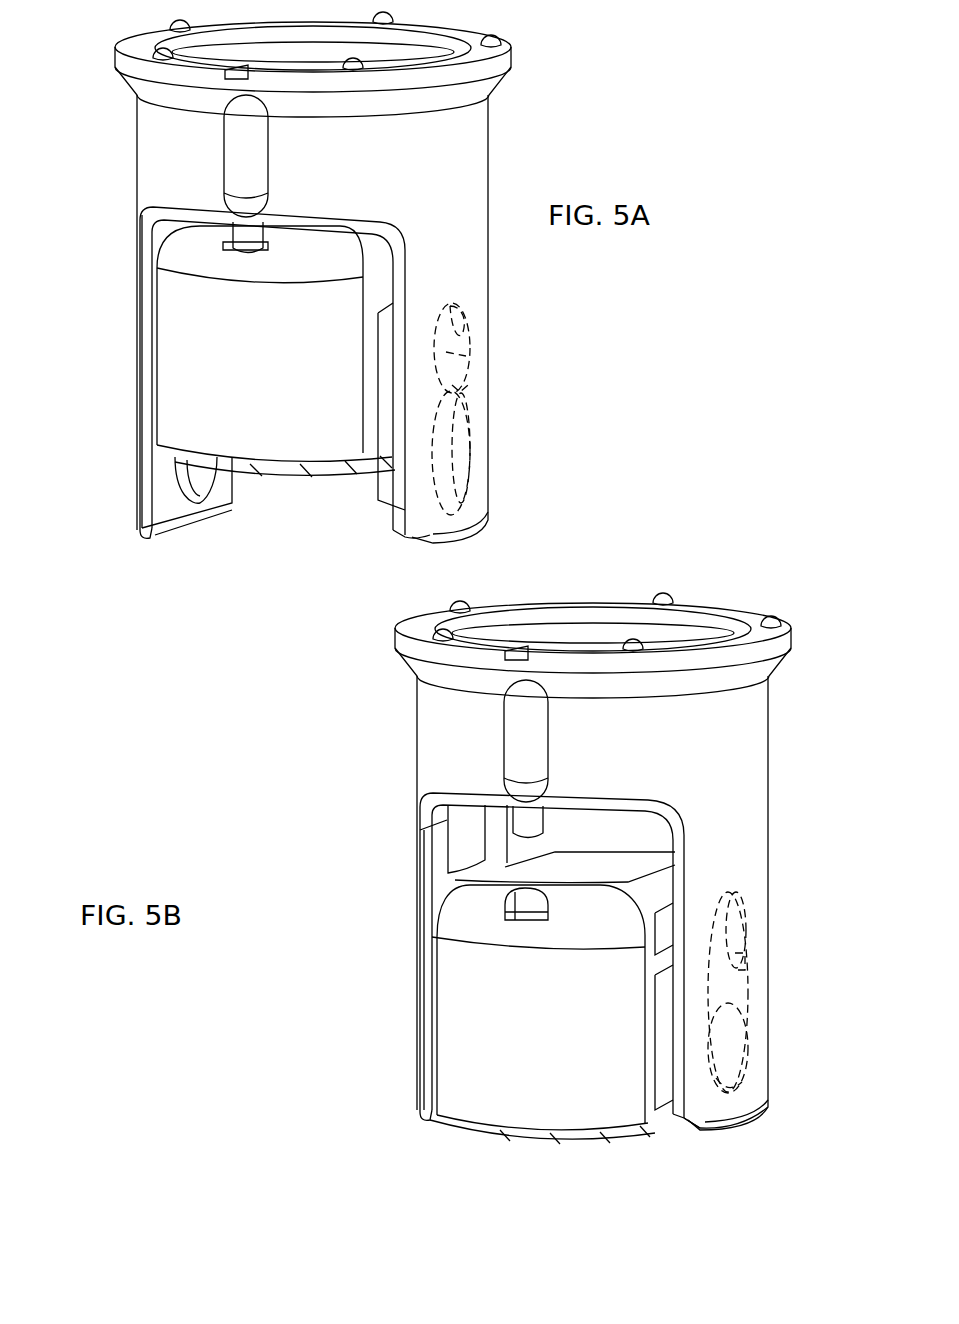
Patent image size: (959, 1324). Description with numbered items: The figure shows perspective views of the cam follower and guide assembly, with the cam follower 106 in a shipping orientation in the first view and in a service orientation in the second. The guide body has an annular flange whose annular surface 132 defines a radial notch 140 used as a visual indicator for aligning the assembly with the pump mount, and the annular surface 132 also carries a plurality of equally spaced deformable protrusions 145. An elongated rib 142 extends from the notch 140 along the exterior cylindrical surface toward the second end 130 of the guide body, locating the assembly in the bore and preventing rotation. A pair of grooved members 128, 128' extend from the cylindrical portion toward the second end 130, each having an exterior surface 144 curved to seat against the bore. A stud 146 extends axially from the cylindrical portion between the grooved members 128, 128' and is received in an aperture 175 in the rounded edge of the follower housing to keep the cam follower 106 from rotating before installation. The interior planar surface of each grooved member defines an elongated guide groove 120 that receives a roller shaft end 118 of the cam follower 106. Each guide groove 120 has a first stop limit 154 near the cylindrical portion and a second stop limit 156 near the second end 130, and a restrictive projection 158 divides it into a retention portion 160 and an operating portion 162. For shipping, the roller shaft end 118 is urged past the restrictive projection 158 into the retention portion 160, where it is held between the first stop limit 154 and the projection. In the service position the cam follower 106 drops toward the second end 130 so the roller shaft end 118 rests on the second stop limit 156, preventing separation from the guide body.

In FIG. 5A, the cam follower 106 is at (178, 355).
In FIG. 5B, the cam follower 106 is at (445, 990).
In FIG. 5A, the roller shaft end 118 is at (456, 357).
In FIG. 5B, the roller shaft end 118 is at (730, 1050).
In FIG. 5A, the first elongated guide groove 120 is at (378, 402).
In FIG. 5B, the first grooved member 128 is at (753, 1137).
In FIG. 5A, the second grooved member 128' is at (237, 372).
In FIG. 5A, the second end 130 is at (437, 540).
In FIG. 5B, the annular surface 132 is at (748, 620).
In FIG. 5B, the notch 140 is at (523, 657).
In FIG. 5B, the elongated rib 142 is at (523, 748).
In FIG. 5B, the exterior surface 144 is at (757, 942).
In FIG. 5B, the deformable protrusion 145 is at (661, 603).
In FIG. 5B, the stud 146 is at (523, 822).
In FIG. 5A, the first stop limit 154 is at (462, 335).
In FIG. 5B, the first stop limit 154 is at (735, 912).
In FIG. 5A, the second stop limit 156 is at (468, 482).
In FIG. 5B, the second stop limit 156 is at (740, 1082).
In FIG. 5A, the restrictive projection 158 is at (466, 398).
In FIG. 5B, the restrictive projection 158 is at (745, 960).
In FIG. 5B, the retention portion 160 is at (655, 923).
In FIG. 5B, the operating portion 162 is at (655, 1023).
In FIG. 5B, the aperture 175 is at (530, 908).